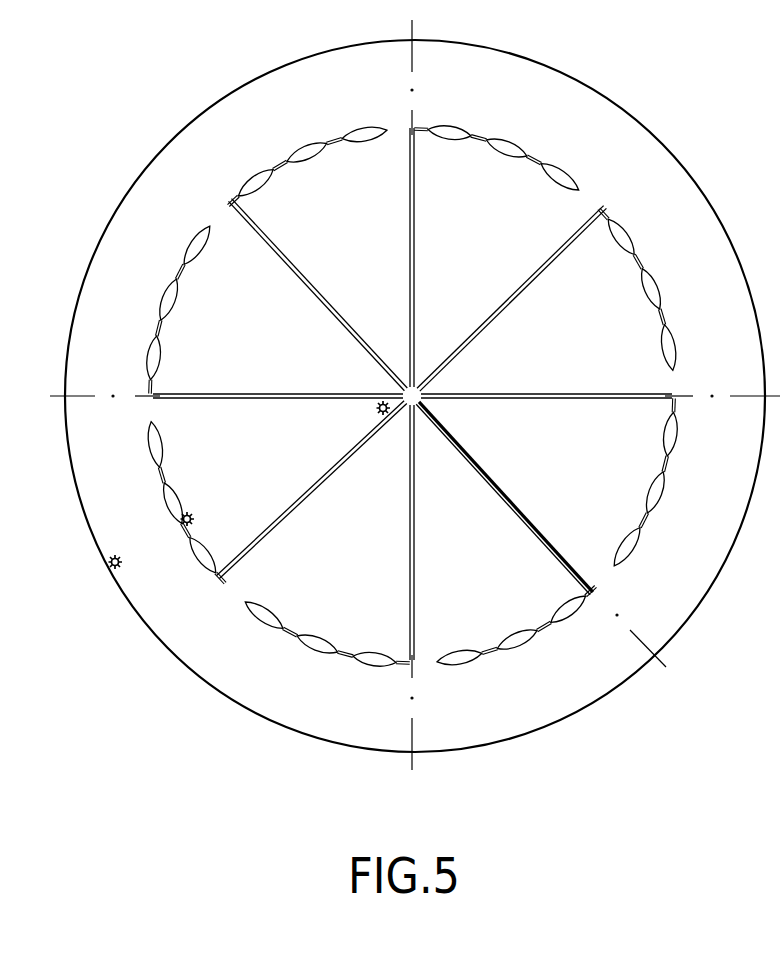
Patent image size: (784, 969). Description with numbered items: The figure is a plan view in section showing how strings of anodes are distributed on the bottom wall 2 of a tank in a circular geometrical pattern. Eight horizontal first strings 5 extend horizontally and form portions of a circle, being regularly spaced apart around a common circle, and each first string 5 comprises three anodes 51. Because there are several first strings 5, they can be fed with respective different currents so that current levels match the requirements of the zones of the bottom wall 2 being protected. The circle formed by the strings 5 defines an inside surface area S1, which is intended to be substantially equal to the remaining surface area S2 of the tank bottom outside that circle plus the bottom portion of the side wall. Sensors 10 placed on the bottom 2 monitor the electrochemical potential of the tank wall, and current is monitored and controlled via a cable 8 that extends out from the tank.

The bottom wall 2 is at (693, 582).
The first string of anodes 5 is at (429, 396).
The first anode 51 is at (644, 296).
The cable 8 is at (496, 316).
The sensor 10 is at (376, 409).
The inside surface area S1 is at (471, 577).
The remaining bottom surface area S2 is at (516, 699).